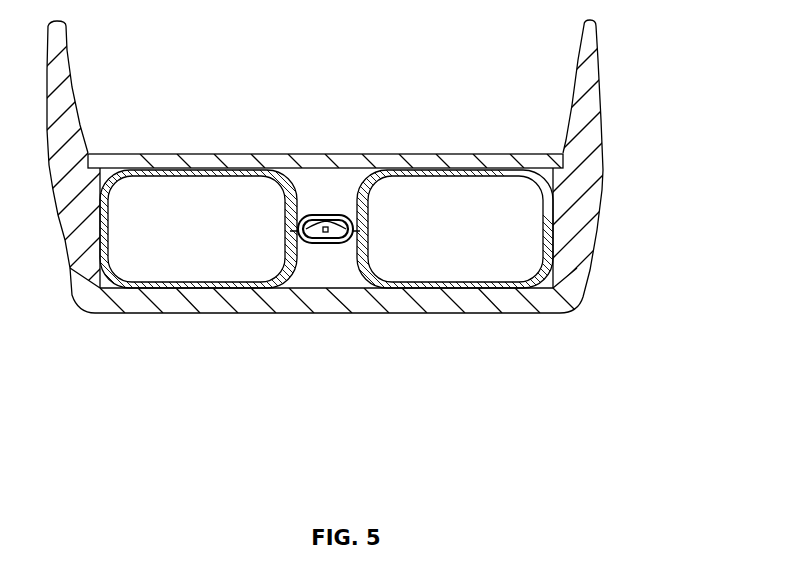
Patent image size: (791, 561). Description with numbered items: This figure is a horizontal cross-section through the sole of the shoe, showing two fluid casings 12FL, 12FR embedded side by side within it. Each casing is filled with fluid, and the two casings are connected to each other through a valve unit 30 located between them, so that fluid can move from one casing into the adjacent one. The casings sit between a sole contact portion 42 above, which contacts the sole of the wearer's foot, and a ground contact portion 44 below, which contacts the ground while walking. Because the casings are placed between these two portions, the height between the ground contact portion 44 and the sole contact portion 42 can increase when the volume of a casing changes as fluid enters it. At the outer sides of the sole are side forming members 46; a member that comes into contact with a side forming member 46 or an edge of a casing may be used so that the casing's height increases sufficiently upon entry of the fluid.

The fluid casing 12FL is at (190, 240).
The fluid casing 12FR is at (455, 237).
The valve unit 30 is at (329, 208).
The sole contact portion 42 is at (445, 154).
The ground contact portion 44 is at (318, 314).
The side forming member 46 is at (603, 170).